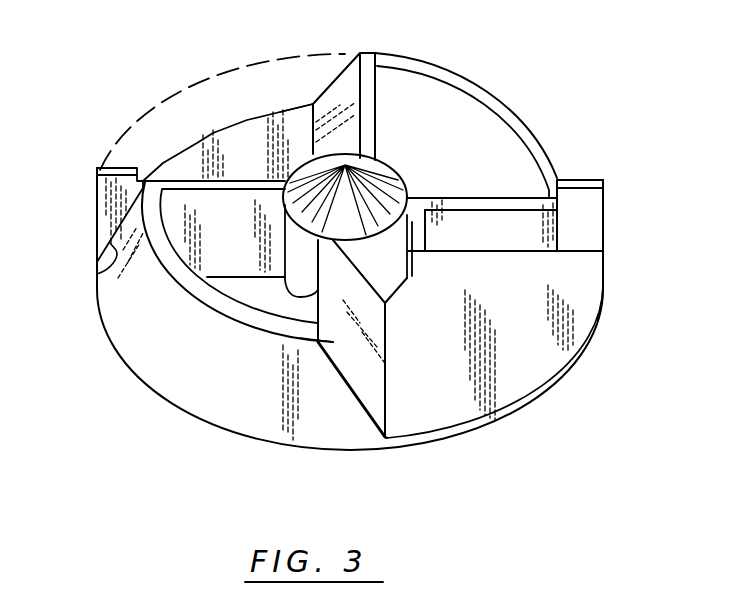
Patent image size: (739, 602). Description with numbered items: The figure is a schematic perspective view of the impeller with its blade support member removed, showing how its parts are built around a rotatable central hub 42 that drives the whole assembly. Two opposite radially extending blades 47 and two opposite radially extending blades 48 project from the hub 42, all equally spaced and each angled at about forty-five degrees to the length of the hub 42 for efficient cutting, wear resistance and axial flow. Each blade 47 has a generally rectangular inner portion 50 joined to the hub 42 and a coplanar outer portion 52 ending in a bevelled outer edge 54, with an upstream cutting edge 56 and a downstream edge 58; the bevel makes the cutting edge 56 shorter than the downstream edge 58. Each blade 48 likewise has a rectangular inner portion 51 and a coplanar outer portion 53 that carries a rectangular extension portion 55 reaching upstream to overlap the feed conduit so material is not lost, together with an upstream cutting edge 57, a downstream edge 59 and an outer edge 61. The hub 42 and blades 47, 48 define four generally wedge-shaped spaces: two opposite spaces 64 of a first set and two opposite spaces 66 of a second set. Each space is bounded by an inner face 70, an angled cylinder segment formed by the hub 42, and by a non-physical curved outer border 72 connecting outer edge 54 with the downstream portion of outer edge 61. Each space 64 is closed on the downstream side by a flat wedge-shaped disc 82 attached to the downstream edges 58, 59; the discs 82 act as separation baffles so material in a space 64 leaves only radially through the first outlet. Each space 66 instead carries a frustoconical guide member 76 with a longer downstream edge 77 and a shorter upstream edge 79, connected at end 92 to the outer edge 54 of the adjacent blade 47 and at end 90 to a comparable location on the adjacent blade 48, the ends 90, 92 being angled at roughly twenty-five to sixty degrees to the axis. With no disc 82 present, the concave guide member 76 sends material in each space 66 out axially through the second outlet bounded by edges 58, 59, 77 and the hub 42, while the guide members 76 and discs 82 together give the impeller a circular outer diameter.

The rotatable central hub 42 is at (380, 172).
The radially extending blade 47 is at (337, 97).
The radially extending blade 48 is at (233, 225).
The inner portion 50 is at (345, 280).
The inner portion 51 is at (425, 247).
The outer portion 52 is at (368, 374).
The outer portion 53 is at (580, 233).
The bevelled outer edge 54 is at (374, 432).
The rectangular extension portion 55 is at (583, 192).
The upstream cutting edge 56 is at (290, 327).
The upstream cutting edge 57 is at (483, 197).
The downstream edge 58 is at (387, 400).
The downstream edge 59 is at (497, 252).
The outer edge 61 is at (603, 208).
The generally wedge-shaped space 64 is at (247, 147).
The generally wedge-shaped space 66 is at (253, 300).
The inner face 70 is at (397, 280).
The outer border 72 is at (243, 67).
The frustoconical guide member 76 is at (180, 377).
The downstream edge 77 is at (227, 431).
The upstream edge 79 is at (172, 277).
The wedge-shaped disc 82 is at (288, 122).
The end 90 is at (98, 283).
The end 92 is at (362, 398).